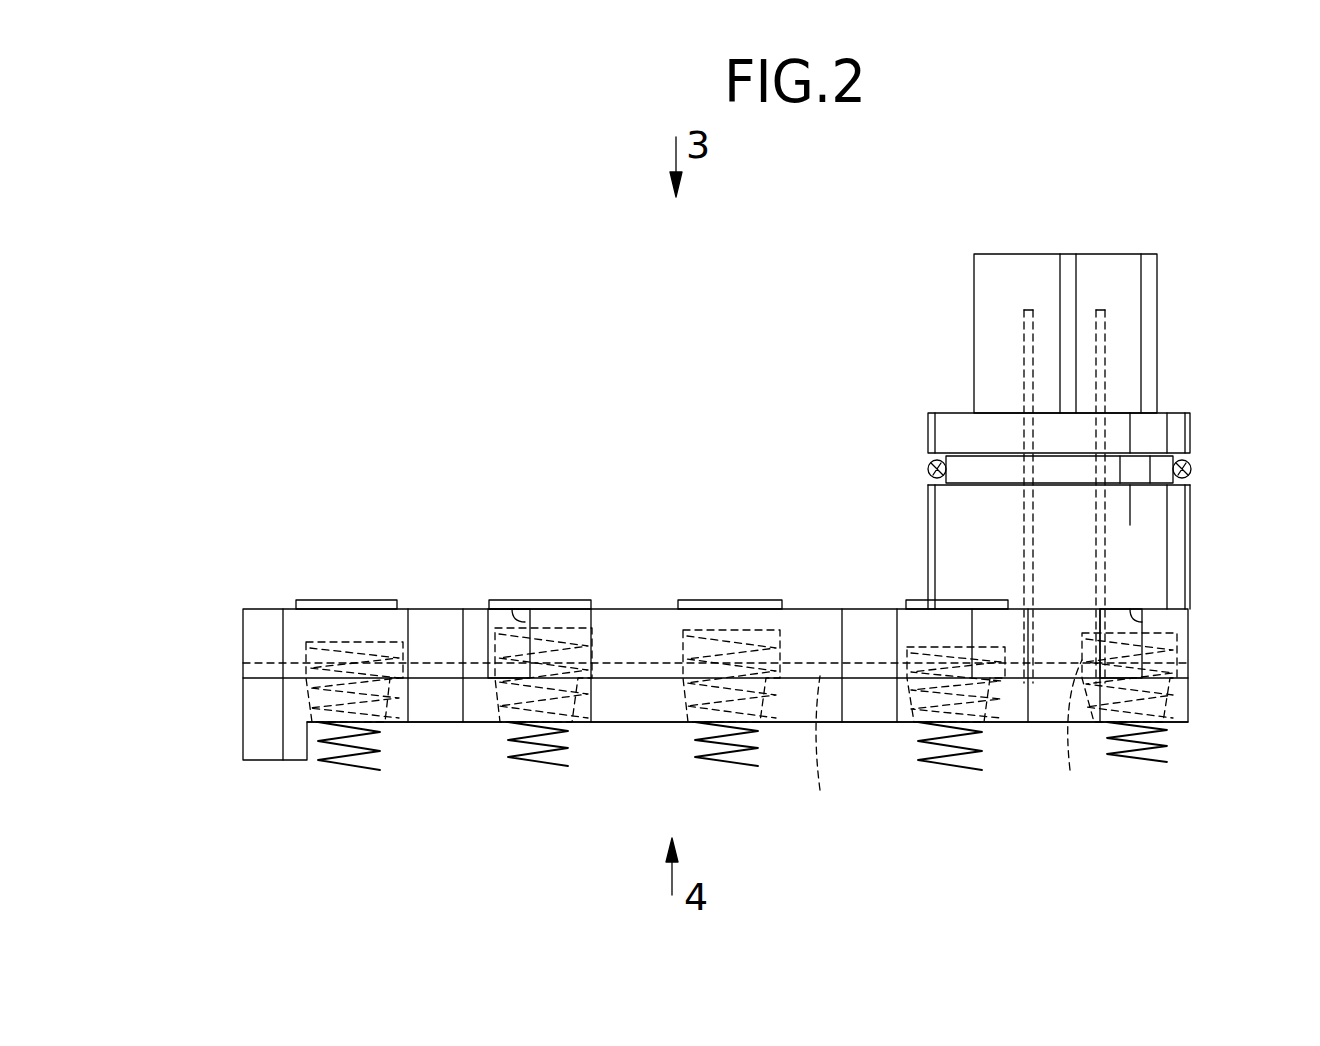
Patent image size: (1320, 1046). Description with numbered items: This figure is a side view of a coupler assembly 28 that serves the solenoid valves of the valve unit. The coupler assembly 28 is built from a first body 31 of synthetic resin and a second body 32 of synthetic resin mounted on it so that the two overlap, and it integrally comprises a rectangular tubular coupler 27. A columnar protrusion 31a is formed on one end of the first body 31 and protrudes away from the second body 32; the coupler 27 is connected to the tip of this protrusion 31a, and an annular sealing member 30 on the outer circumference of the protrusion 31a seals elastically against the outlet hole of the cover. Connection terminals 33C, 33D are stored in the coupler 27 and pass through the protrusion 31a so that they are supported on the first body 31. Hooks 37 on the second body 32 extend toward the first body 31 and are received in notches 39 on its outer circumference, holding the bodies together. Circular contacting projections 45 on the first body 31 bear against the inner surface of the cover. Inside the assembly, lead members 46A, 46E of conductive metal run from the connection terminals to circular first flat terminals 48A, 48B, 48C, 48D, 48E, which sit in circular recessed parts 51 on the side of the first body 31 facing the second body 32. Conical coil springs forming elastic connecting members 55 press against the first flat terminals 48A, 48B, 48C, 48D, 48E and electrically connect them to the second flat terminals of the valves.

The coupler 27 is at (985, 296).
The coupler assembly 28 is at (1200, 630).
The annular sealing member 30 is at (1192, 472).
The first body 31 is at (258, 622).
The protrusion 31a is at (948, 436).
The second body 32 is at (618, 738).
The connection terminal 33C is at (1022, 348).
The connection terminal 33D is at (1102, 348).
The hook 37 is at (500, 622).
The notch 39 is at (518, 618).
The contacting projection 45 is at (335, 605).
The lead member 46A is at (820, 749).
The lead member 46E is at (1078, 730).
The first flat terminal 48A is at (375, 648).
The first flat terminal 48B is at (572, 640).
The first flat terminal 48C is at (682, 640).
The first flat terminal 48D is at (950, 650).
The first flat terminal 48E is at (1182, 640).
The recessed part 51 is at (310, 660).
The elastic connecting member 55 is at (370, 770).